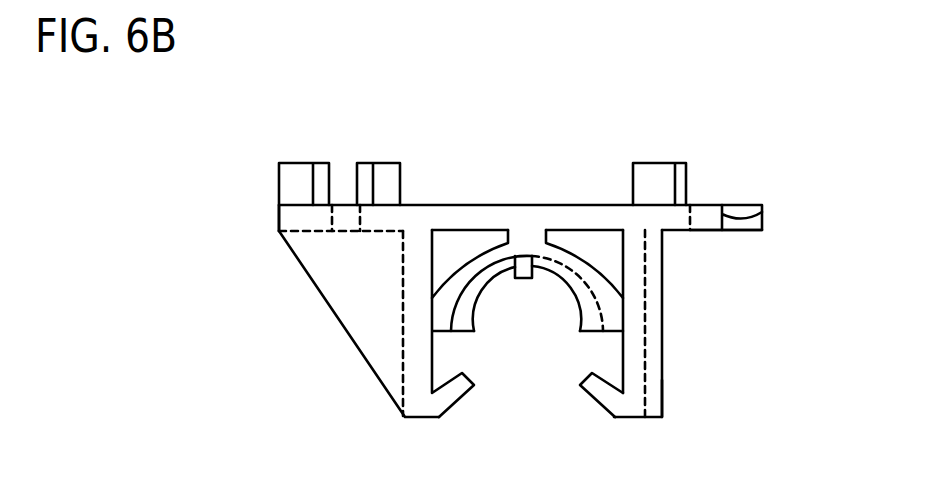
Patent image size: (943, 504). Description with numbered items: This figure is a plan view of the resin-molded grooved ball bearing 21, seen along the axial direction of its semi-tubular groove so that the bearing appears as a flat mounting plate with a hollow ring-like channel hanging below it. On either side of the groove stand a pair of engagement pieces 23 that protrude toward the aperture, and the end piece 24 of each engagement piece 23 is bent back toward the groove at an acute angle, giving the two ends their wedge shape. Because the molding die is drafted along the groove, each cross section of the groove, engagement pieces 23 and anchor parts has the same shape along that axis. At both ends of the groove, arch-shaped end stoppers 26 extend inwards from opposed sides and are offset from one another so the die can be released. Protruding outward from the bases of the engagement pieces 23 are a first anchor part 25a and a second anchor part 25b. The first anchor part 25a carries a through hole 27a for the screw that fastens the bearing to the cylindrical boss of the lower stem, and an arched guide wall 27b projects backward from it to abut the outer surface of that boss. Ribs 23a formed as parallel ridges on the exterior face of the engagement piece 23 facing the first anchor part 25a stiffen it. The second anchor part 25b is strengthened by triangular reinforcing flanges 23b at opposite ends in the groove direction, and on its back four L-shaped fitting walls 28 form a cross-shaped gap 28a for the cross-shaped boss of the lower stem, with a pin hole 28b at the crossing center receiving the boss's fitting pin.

The grooved ball bearing 21 is at (700, 184).
The engagement piece 23 is at (637, 343).
The ribs 23a is at (662, 407).
The reinforcing flanges 23b is at (378, 350).
The end piece 24 is at (448, 393).
The first anchor part 25a is at (743, 231).
The second anchor part 25b is at (279, 231).
The end stoppers 26 is at (477, 292).
The through hole 27a is at (763, 212).
The arched guide wall 27b is at (652, 182).
The L-shaped fitting walls 28 is at (385, 180).
The cross-shaped gap 28a is at (342, 182).
The pin hole 28b is at (350, 231).